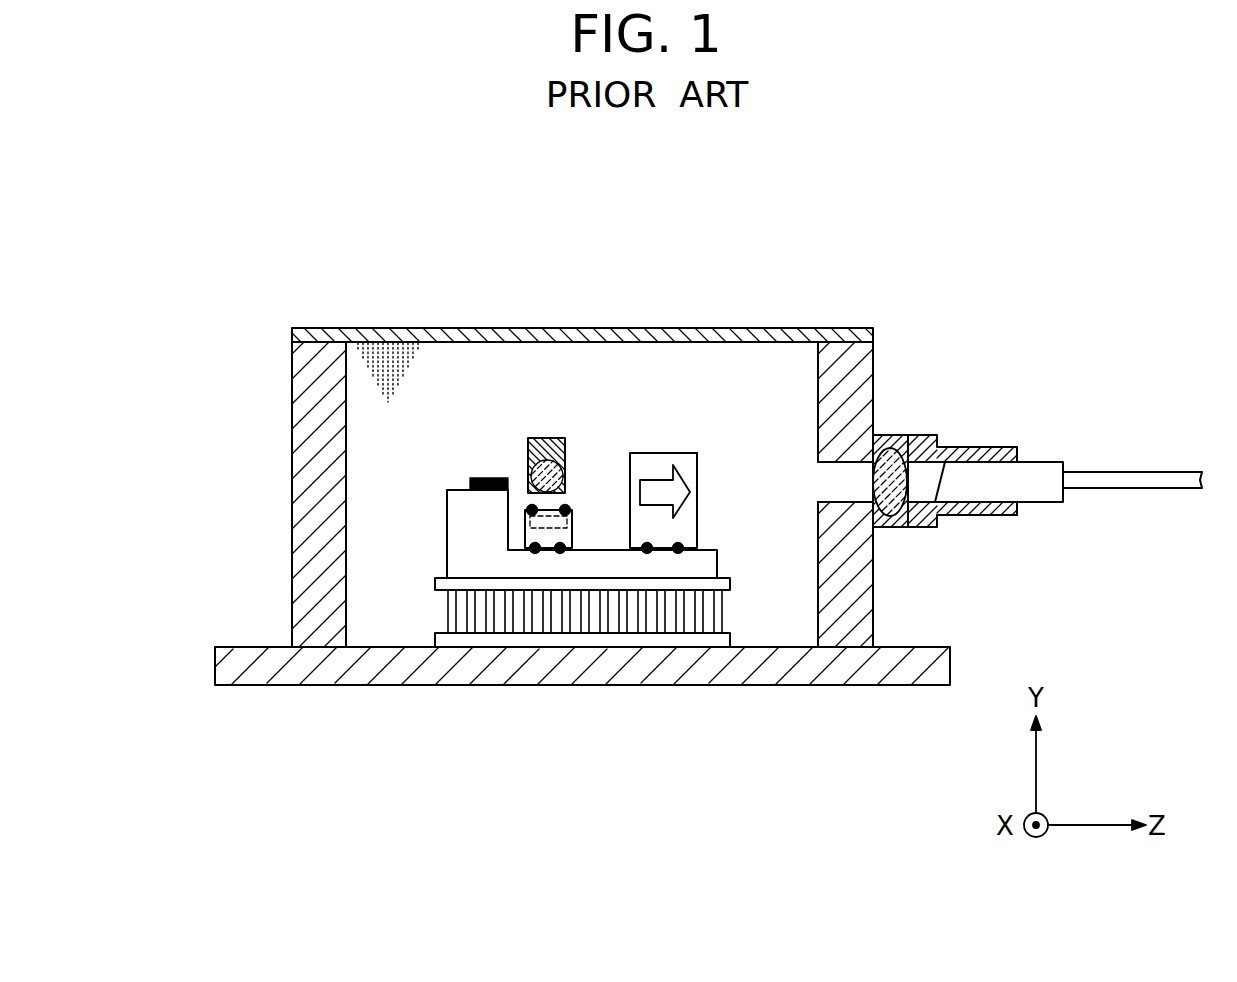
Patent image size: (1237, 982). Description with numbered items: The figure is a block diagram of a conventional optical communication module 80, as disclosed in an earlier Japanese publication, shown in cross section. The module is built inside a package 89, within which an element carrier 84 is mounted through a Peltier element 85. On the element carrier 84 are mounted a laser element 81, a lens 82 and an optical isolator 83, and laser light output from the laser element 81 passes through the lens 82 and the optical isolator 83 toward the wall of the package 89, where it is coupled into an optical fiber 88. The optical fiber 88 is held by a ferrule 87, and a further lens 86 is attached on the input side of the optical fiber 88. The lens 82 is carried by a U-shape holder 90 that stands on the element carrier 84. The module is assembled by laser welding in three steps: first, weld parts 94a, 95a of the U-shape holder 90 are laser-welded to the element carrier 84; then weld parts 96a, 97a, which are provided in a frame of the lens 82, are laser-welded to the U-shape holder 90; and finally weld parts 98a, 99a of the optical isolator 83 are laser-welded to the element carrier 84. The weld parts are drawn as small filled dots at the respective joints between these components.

The optical communication module 80 is at (874, 260).
The laser element 81 is at (490, 476).
The lens 82 is at (535, 437).
The optical isolator 83 is at (657, 462).
The element carrier 84 is at (463, 538).
The Peltier element 85 is at (447, 610).
The lens 86 is at (898, 435).
The ferrule 87 is at (1041, 460).
The optical fiber 88 is at (1140, 472).
The package 89 is at (292, 395).
The U-shape holder 90 is at (575, 528).
The weld part 94a is at (530, 552).
The weld part 95a is at (558, 552).
The weld part 96a is at (531, 505).
The weld part 97a is at (565, 505).
The weld part 98a is at (646, 552).
The weld part 99a is at (679, 552).